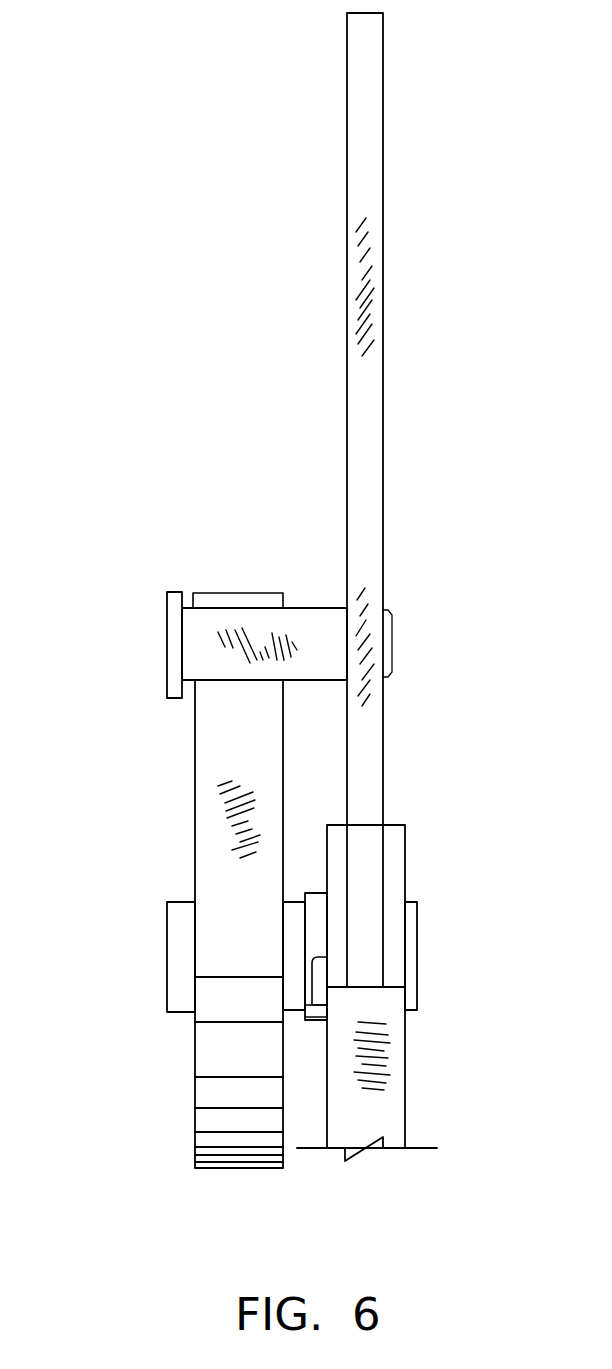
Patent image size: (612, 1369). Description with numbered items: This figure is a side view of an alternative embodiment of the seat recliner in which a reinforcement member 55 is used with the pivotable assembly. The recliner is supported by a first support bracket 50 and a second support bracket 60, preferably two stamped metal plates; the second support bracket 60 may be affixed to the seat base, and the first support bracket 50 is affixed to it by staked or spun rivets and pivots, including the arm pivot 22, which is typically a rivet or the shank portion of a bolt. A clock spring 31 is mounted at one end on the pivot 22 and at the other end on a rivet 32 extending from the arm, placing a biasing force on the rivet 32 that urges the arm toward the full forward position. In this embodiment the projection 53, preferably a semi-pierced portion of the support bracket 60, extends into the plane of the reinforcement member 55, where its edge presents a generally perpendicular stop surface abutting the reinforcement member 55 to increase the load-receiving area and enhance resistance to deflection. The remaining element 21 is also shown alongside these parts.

The support bar 21 is at (352, 305).
The arm pivot 22 is at (410, 963).
The clock spring 31 is at (202, 817).
The rivet 32 is at (195, 643).
The first support bracket 50 is at (400, 842).
The projection 53 is at (322, 992).
The reinforcement member 55 is at (320, 910).
The second support bracket 60 is at (333, 843).